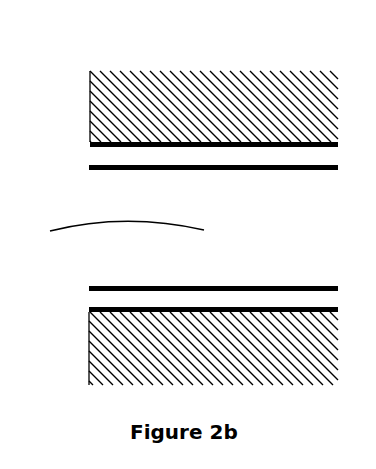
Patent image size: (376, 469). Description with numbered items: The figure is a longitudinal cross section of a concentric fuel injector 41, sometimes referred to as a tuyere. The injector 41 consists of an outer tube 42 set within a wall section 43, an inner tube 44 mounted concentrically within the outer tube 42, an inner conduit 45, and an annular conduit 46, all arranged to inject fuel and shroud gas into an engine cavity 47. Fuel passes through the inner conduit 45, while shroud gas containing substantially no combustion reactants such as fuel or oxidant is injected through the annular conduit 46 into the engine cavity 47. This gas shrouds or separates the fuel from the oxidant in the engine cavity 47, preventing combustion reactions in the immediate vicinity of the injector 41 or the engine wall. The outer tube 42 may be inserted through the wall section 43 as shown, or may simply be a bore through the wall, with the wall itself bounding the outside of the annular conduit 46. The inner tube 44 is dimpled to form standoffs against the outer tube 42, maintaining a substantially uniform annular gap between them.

The injector 41 is at (165, 205).
The outer tube 42 is at (90, 146).
The wall section 43 is at (183, 78).
The inner tube 44 is at (88, 168).
The inner conduit 45 is at (117, 232).
The annular conduit 46 is at (100, 158).
The engine cavity 47 is at (25, 216).